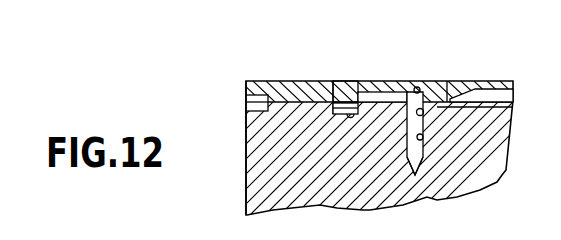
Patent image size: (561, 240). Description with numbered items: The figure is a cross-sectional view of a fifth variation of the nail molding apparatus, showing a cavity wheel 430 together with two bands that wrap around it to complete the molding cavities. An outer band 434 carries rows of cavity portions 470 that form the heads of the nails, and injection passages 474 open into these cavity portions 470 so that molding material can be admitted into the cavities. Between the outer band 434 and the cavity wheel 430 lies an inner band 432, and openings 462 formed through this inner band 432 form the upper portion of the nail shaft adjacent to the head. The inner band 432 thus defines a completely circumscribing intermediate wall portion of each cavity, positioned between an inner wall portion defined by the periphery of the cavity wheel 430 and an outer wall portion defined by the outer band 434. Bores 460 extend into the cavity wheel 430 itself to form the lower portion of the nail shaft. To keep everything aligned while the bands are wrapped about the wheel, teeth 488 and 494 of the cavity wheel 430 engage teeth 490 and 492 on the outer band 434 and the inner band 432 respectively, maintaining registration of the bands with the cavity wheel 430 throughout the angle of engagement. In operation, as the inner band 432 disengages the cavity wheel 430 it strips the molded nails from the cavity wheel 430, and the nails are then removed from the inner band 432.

The cavity wheel 430 is at (250, 187).
The inner band 432 is at (380, 110).
The outer band 434 is at (346, 88).
The bores 460 is at (423, 138).
The openings 462 is at (428, 111).
The cavity portions 470 is at (420, 88).
The injection passages 474 is at (490, 87).
The teeth 488 is at (245, 118).
The teeth 490 is at (246, 100).
The teeth 492 is at (332, 86).
The teeth 494 is at (365, 106).